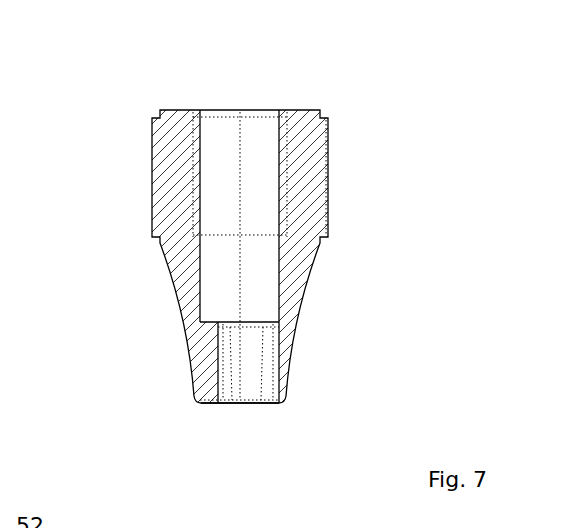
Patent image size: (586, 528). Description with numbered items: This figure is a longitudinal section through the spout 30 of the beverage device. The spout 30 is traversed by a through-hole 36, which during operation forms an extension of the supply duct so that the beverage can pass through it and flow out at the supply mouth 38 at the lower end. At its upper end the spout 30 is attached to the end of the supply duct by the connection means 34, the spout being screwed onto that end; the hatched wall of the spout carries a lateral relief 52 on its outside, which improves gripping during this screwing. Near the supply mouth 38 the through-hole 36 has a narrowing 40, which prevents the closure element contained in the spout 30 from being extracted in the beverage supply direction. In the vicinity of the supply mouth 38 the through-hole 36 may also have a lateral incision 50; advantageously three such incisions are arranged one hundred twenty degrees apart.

The spout 30 is at (325, 143).
The connection means 34 is at (211, 147).
The through-hole 36 is at (279, 157).
The supply mouth 38 is at (260, 403).
The narrowing 40 is at (203, 322).
The lateral incision 50 is at (281, 389).
The lateral relief 52 is at (327, 207).